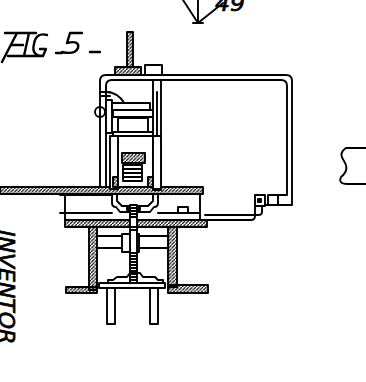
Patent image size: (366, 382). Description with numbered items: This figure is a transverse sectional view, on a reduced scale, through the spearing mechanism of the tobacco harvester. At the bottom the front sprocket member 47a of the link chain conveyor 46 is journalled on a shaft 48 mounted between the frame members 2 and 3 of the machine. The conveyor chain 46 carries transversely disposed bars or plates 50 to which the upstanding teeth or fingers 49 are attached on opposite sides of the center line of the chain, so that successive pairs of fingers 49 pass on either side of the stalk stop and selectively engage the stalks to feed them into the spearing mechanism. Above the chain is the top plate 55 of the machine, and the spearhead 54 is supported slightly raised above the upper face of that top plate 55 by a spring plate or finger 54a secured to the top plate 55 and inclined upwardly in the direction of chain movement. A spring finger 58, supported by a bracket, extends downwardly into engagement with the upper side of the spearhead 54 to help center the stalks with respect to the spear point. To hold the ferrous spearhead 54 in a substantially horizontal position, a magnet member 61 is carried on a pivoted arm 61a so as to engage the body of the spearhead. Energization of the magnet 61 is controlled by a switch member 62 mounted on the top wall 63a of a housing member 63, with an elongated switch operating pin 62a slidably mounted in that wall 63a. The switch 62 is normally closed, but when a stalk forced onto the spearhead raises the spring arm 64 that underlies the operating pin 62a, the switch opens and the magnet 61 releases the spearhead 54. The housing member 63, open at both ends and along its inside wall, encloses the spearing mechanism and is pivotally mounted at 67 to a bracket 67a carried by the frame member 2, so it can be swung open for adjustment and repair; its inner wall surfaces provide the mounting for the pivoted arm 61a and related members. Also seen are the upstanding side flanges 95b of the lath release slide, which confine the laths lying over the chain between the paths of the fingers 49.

The frame member 2 is at (88, 257).
The frame member 3 is at (177, 263).
The link chain conveyor 46 is at (67, 222).
The sprocket member 47a is at (97, 238).
The shaft 48 is at (160, 268).
The upstanding teeth or fingers 49 is at (158, 315).
The transversely disposed bars or plates 50 is at (108, 201).
The spearhead 54 is at (113, 167).
The spring plate or finger 54a is at (114, 181).
The top plate 55 is at (13, 187).
The spring finger 58 is at (112, 158).
The magnet member 61 is at (149, 124).
The pivoted arm 61a is at (100, 93).
The switch member 62 is at (160, 65).
The switch operating pin 62a is at (162, 96).
The housing member 63 is at (294, 95).
The top wall 63a is at (235, 76).
The spring arm 64 is at (163, 128).
The pivot 67 is at (260, 196).
The bracket 67a is at (243, 220).
The upstanding side flanges 95b is at (160, 168).